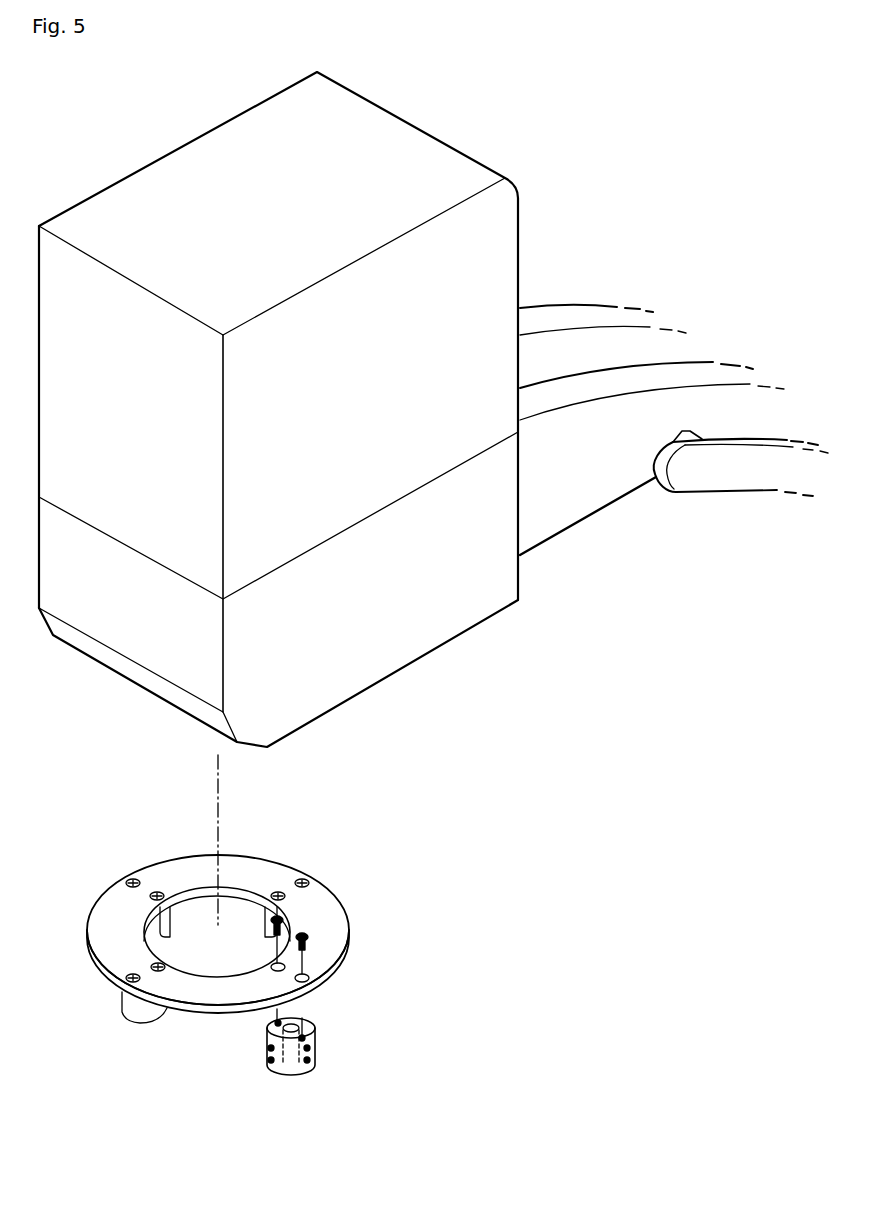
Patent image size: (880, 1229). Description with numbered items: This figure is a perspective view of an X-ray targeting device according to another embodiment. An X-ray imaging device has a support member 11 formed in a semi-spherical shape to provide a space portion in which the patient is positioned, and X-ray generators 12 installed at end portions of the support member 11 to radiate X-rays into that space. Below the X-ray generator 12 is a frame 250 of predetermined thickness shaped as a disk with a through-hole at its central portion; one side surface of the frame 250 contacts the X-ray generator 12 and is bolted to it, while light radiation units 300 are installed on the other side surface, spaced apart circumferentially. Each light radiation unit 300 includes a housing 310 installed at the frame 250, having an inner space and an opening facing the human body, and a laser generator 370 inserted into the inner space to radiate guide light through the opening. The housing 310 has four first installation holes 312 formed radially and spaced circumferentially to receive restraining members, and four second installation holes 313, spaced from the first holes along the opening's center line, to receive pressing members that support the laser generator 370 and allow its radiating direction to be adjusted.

The support member 11 is at (557, 502).
The X-ray generator 12 is at (404, 643).
The frame 250 is at (325, 920).
The light radiation unit 300 is at (325, 1044).
The housing 310 is at (313, 1040).
The first installation holes 312 is at (310, 1073).
The second installation holes 313 is at (313, 1052).
The laser generator 370 is at (285, 1068).